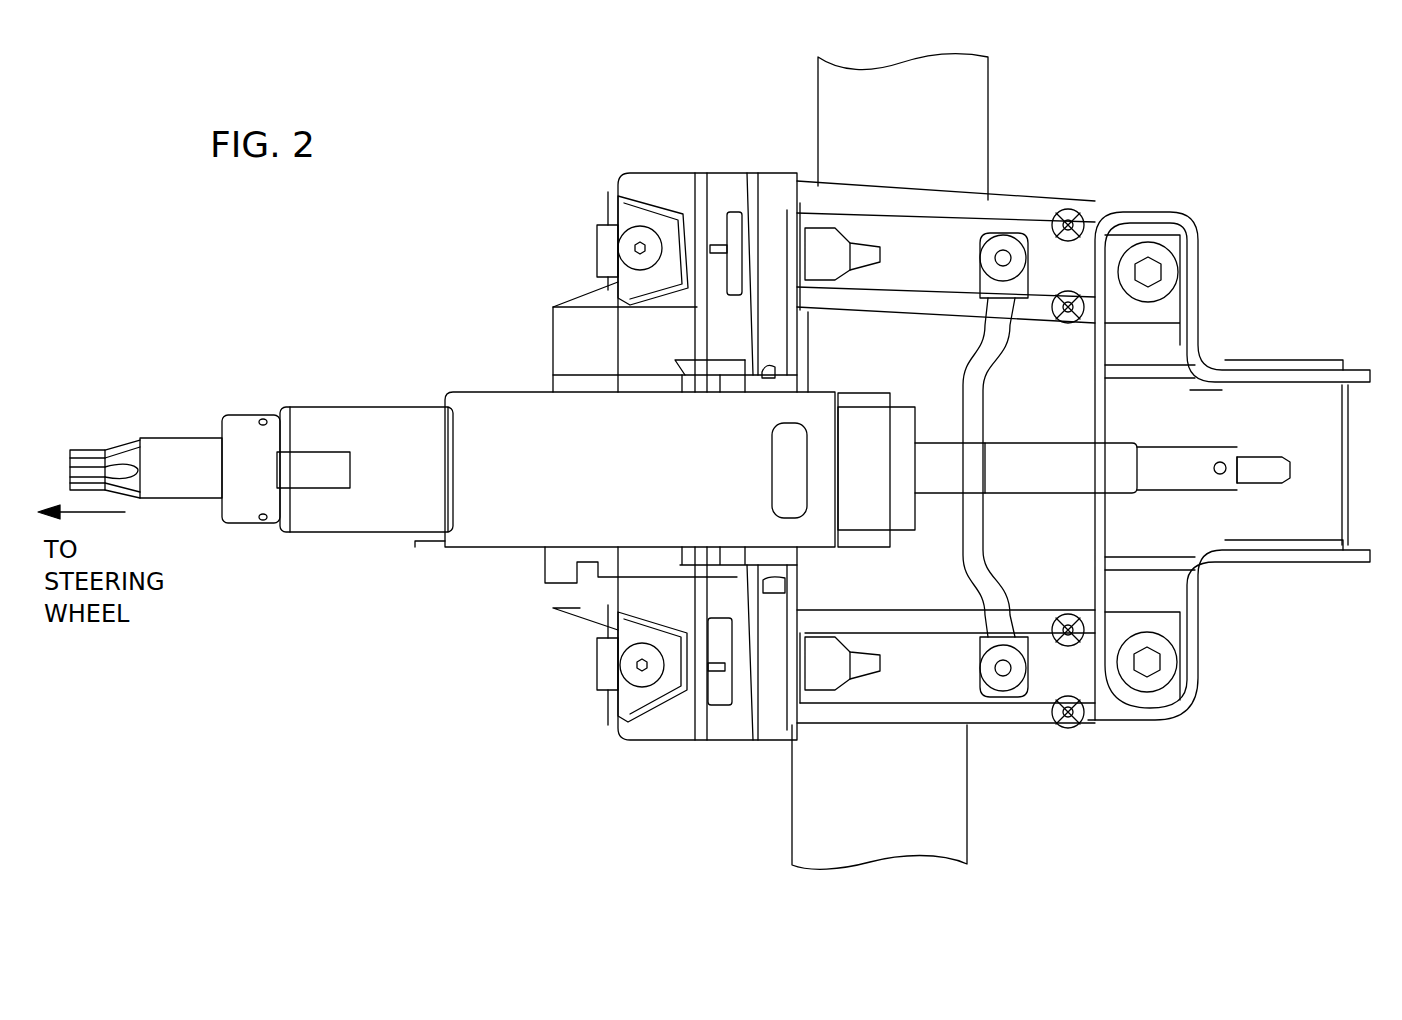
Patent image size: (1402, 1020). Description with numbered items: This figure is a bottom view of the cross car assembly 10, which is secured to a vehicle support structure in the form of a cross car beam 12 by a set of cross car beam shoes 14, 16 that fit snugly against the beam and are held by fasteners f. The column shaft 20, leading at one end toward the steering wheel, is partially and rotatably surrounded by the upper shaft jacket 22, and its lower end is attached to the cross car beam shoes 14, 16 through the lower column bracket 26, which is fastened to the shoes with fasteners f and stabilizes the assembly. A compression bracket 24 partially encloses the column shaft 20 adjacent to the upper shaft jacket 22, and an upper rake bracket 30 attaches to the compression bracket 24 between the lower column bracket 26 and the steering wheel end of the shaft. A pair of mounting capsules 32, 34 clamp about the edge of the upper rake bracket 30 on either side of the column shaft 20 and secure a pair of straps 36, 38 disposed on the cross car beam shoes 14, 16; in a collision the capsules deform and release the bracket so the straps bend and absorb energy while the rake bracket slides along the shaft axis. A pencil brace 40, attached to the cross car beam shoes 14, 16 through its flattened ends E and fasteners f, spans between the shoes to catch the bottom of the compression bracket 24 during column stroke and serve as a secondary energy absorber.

The cross car assembly 10 is at (1306, 153).
The cross car beam 12 is at (975, 107).
The cross car beam shoe 14 is at (940, 715).
The cross car beam shoe 16 is at (955, 237).
The column shaft 20 is at (178, 446).
The upper shaft jacket 22 is at (312, 520).
The compression bracket 24 is at (480, 408).
The lower column bracket 26 is at (1243, 523).
The upper rake bracket 30 is at (575, 347).
The mounting capsule 32 is at (607, 665).
The mounting capsule 34 is at (612, 248).
The strap 36 is at (600, 643).
The strap 38 is at (598, 258).
The pencil brace 40 is at (977, 527).
The flattened end E is at (988, 290).
The fastener f is at (638, 242).